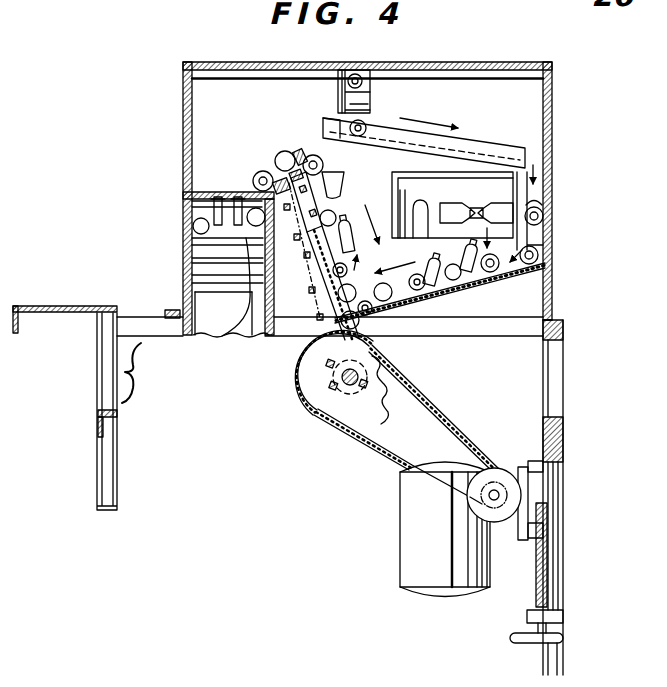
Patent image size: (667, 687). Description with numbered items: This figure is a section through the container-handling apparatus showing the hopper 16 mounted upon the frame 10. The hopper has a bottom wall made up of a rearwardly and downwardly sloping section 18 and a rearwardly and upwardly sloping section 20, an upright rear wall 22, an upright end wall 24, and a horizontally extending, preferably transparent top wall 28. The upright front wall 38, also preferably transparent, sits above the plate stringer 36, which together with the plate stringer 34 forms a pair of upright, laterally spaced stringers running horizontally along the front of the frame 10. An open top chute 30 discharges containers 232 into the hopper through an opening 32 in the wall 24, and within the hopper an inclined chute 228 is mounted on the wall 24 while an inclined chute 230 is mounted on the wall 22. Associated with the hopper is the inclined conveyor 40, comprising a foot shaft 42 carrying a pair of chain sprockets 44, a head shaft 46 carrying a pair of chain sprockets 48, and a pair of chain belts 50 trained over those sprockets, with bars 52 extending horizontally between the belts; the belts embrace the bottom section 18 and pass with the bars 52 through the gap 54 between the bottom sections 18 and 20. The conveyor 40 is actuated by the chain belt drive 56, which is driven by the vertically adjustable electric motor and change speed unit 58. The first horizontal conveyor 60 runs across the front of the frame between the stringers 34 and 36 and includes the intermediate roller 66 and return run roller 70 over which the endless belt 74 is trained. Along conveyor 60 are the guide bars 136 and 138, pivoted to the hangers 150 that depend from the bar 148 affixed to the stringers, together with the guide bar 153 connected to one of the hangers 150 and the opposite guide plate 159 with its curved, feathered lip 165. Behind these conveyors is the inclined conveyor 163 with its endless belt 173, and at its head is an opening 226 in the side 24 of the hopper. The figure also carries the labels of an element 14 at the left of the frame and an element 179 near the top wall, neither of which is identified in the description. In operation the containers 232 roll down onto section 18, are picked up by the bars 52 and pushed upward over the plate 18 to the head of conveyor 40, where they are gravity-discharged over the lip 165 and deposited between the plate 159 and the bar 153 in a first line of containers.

The frame 10 is at (156, 373).
The shelf 14 is at (50, 306).
The hopper 16 is at (468, 98).
The rearwardly and downwardly sloping bottom section 18 is at (312, 340).
The rearwardly and upwardly sloping bottom section 20 is at (464, 280).
The upright rear wall 22 is at (553, 150).
The upright end wall 24 is at (516, 102).
The top wall 28 is at (278, 64).
The open top chute 30 is at (503, 188).
The opening 32 is at (443, 178).
The plate stringer 34 is at (256, 346).
The plate stringer 36 is at (200, 247).
The upright front wall 38 is at (182, 112).
The inclined conveyor 40 is at (290, 144).
The foot shaft 42 is at (337, 417).
The chain sprockets 44 is at (365, 430).
The head shaft 46 is at (307, 152).
The chain sprockets 48 is at (266, 171).
The chain belts 50 is at (314, 256).
The bars 52 is at (338, 384).
The gap 54 is at (388, 348).
The chain belt drive 56 is at (456, 421).
The electric motor and change speed unit 58 is at (460, 529).
The first horizontal conveyor 60 is at (208, 324).
The intermediate roller 66 is at (193, 262).
The return run roller 70 is at (190, 283).
The endless belt 74 is at (182, 219).
The guide bar 136 is at (222, 222).
The guide bar 138 is at (182, 234).
The bar 148 is at (182, 198).
The hangers 150 is at (238, 196).
The guide bar 153 is at (236, 334).
The guide plate 159 is at (186, 165).
The inclined conveyor 163 is at (433, 110).
The lip 165 is at (280, 168).
The endless belt 173 is at (366, 105).
The roller 179 is at (338, 95).
The opening 226 is at (362, 76).
The inclined chute 228 is at (463, 152).
The inclined chute 230 is at (553, 234).
The containers 232 is at (430, 268).